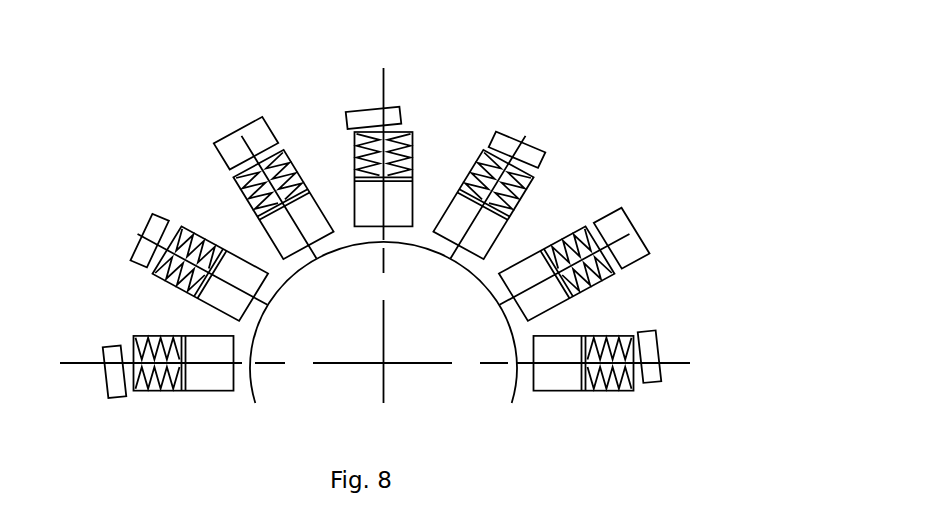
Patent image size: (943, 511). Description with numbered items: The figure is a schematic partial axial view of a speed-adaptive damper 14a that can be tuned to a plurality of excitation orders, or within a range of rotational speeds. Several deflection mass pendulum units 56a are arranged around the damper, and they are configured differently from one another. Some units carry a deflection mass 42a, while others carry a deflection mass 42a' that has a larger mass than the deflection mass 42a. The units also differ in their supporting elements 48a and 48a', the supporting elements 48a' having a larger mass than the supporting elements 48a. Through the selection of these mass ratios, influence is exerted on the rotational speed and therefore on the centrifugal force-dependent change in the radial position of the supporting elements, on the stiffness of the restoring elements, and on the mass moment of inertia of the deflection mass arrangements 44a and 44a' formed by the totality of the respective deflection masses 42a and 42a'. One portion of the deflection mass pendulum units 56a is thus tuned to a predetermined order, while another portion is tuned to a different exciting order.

The speed-adaptive damper 14a is at (608, 66).
The deflection mass 42a is at (427, 261).
The deflection mass 42a' is at (474, 166).
The deflection mass arrangement 44a is at (687, 320).
The deflection mass arrangement 44a' is at (624, 244).
The supporting element 48a is at (417, 265).
The supporting element 48a' is at (382, 243).
The deflection mass pendulum unit 56a is at (621, 187).